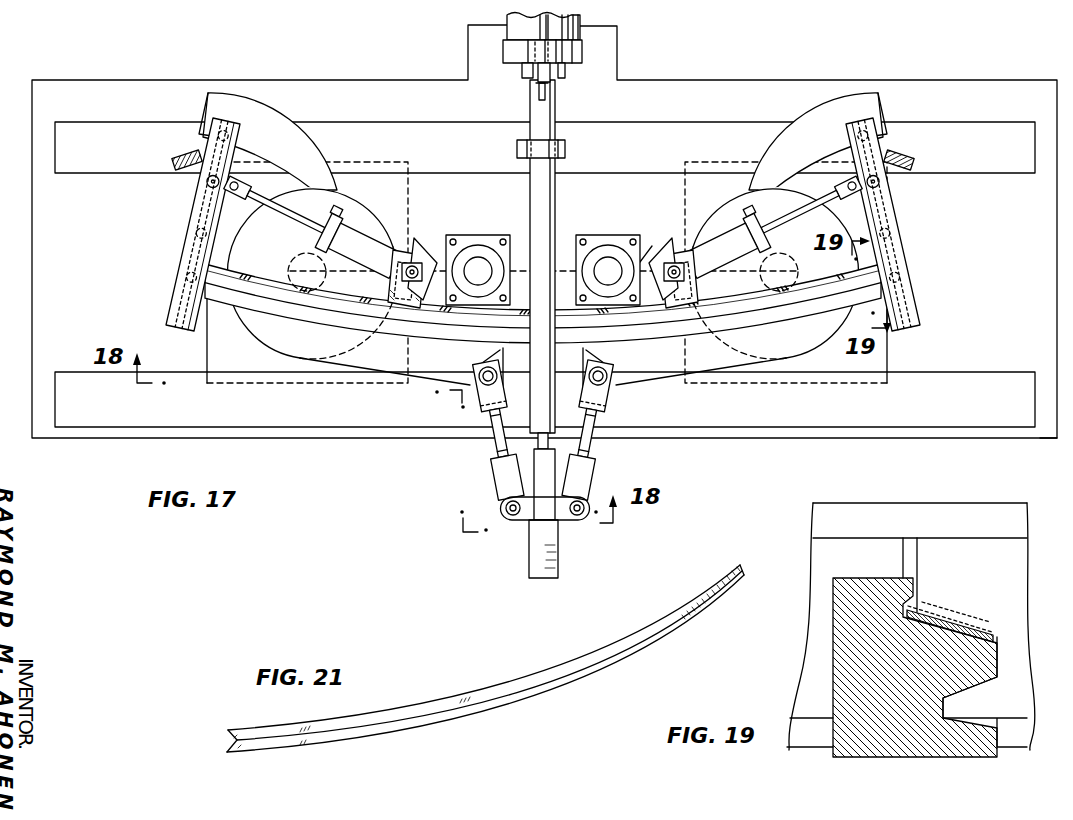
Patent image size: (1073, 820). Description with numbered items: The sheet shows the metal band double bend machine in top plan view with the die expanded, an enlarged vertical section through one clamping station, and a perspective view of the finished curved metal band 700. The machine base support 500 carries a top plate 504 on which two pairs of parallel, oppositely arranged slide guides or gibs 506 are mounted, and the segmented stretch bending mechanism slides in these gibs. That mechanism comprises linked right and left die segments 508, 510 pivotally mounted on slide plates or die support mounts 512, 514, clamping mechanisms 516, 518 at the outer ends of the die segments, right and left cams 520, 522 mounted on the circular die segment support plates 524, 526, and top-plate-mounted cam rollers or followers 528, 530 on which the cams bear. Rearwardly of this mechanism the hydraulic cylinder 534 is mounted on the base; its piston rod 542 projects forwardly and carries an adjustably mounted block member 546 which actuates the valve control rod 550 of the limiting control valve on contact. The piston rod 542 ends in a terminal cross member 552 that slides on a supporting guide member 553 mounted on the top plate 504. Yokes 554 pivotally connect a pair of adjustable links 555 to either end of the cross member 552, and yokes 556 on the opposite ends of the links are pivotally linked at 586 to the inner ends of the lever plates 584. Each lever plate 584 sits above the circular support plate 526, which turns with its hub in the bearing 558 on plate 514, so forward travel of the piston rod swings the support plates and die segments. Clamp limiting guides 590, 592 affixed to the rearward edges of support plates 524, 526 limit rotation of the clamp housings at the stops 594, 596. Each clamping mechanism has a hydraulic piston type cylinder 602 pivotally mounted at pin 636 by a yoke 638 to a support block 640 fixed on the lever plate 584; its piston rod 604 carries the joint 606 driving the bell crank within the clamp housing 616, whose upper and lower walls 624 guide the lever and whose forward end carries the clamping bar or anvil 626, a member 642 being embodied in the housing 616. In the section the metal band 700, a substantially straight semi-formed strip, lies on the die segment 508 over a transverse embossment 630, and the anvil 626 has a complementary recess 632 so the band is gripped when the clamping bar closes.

In FIG. 17, the machine base support 500 is at (1010, 76).
In FIG. 17, the top plate 504 is at (992, 433).
In FIG. 17, the slide guides or gibs 506 is at (66, 166).
In FIG. 17, the die segment 508 is at (810, 307).
In FIG. 19, the die segment 508 is at (840, 678).
In FIG. 17, the die segment 510 is at (396, 352).
In FIG. 17, the slide plate or die support mount 512 is at (887, 357).
In FIG. 17, the slide plate or die support mount 514 is at (236, 366).
In FIG. 17, the clamping mechanism 516 is at (928, 310).
In FIG. 17, the clamping mechanism 518 is at (163, 312).
In FIG. 17, the cam 520 is at (652, 246).
In FIG. 17, the cam 522 is at (446, 244).
In FIG. 17, the circular die segment support plate 524 is at (737, 192).
In FIG. 17, the circular die segment support plate 526 is at (387, 240).
In FIG. 17, the cam roller or follower 528 is at (605, 248).
In FIG. 17, the cam roller or follower 530 is at (505, 214).
In FIG. 17, the hydraulic cylinder 534 is at (582, 32).
In FIG. 17, the piston rod 542 is at (528, 107).
In FIG. 17, the block member 546 is at (566, 148).
In FIG. 17, the valve control rod 550 is at (547, 90).
In FIG. 17, the cross member 552 is at (537, 522).
In FIG. 17, the supporting guide member 553 is at (560, 562).
In FIG. 17, the yokes 554 is at (505, 487).
In FIG. 17, the adjustable links 555 is at (493, 447).
In FIG. 17, the yokes 556 is at (483, 402).
In FIG. 17, the bearing 558 is at (292, 255).
In FIG. 17, the lever plate 584 is at (350, 363).
In FIG. 17, the pivot connection 586 is at (479, 372).
In FIG. 17, the clamp limiting guide 590 is at (833, 97).
In FIG. 17, the clamp limiting guide 592 is at (257, 104).
In FIG. 17, the stop 594 is at (884, 127).
In FIG. 17, the stop 596 is at (200, 130).
In FIG. 17, the hydraulic piston type cylinder 602 is at (717, 198).
In FIG. 17, the piston rod 604 is at (293, 212).
In FIG. 17, the joint 606 is at (251, 185).
In FIG. 19, the clamp housing 616 is at (843, 507).
In FIG. 19, the upper and lower walls 624 is at (889, 506).
In FIG. 19, the clamping bar or anvil 626 is at (1027, 578).
In FIG. 19, the transverse embossment 630 is at (963, 621).
In FIG. 19, the complementary recess 632 is at (955, 605).
In FIG. 17, the pin 636 is at (414, 262).
In FIG. 17, the yoke 638 is at (416, 238).
In FIG. 17, the support block 640 is at (396, 294).
In FIG. 17, the member 642 is at (172, 157).
In FIG. 17, the metal band 700 is at (178, 282).
In FIG. 21, the metal band 700 is at (482, 694).
In FIG. 19, the metal band 700 is at (993, 660).